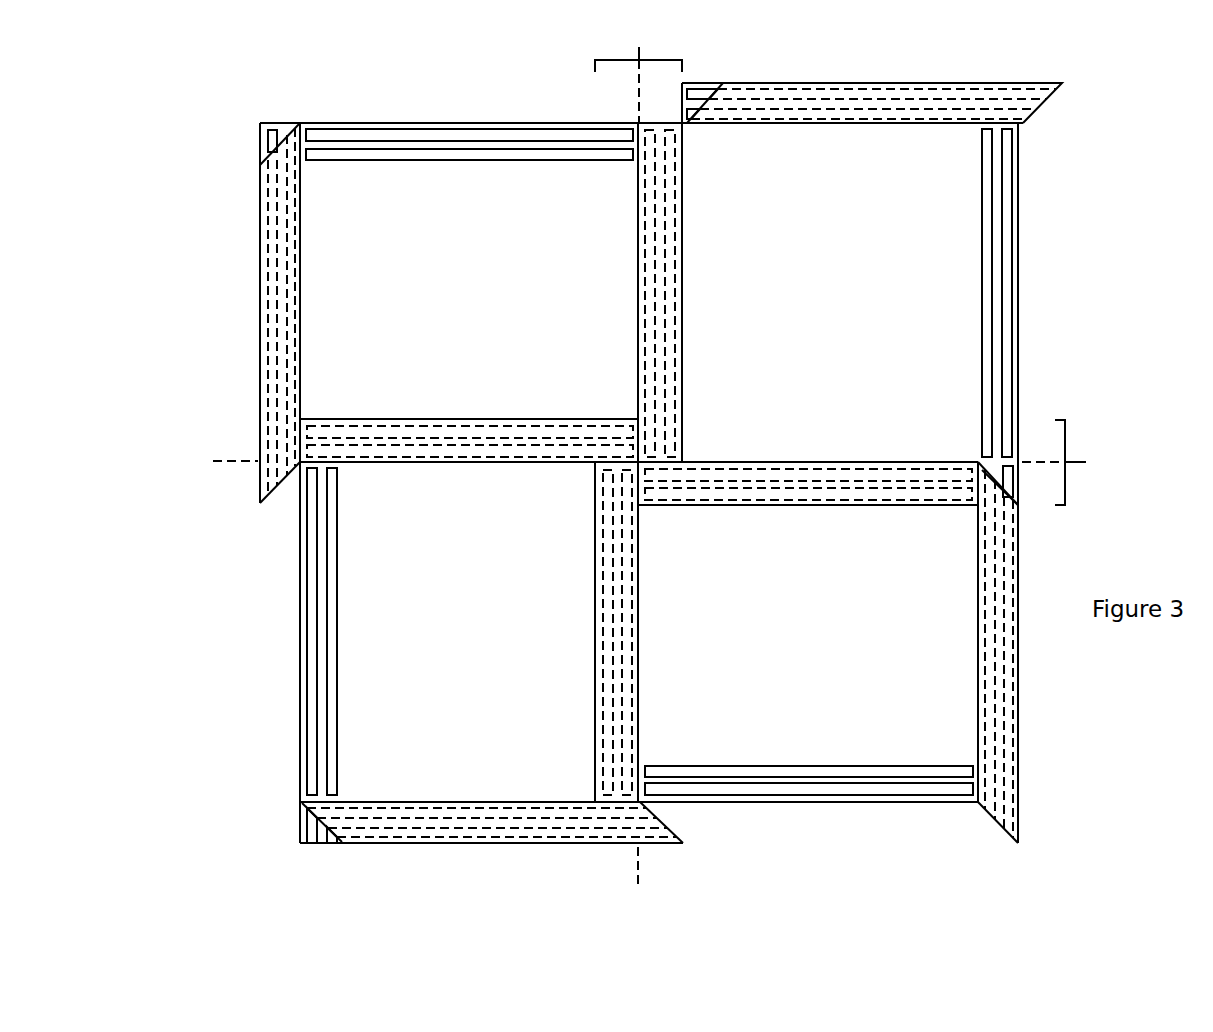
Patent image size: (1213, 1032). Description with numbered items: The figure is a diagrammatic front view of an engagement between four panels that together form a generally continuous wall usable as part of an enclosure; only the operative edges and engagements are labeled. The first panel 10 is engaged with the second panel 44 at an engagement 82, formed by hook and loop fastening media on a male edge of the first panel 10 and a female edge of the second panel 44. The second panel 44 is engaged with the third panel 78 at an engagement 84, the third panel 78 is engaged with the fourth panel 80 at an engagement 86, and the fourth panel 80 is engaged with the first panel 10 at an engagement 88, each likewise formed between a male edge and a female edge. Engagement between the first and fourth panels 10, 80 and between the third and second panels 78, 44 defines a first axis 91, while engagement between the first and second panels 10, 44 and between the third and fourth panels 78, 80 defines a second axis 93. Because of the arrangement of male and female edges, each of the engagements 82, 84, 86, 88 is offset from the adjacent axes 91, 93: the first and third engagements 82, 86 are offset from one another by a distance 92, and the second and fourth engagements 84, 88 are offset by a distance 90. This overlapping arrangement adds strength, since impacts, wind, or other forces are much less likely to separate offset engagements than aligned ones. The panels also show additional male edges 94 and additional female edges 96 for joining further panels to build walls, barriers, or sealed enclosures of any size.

The first panel 10 is at (238, 842).
The second panel 44 is at (942, 862).
The third panel 78 is at (1053, 177).
The fourth panel 80 is at (235, 122).
The engagement 82 is at (617, 580).
The engagement 84 is at (773, 485).
The engagement 86 is at (663, 300).
The engagement 88 is at (533, 440).
The distance 90 is at (1070, 462).
The first axis 91 is at (213, 460).
The distance 92 is at (638, 72).
The second axis 93 is at (638, 888).
The additional male edges 94 is at (427, 122).
The additional female edges 96 is at (302, 268).